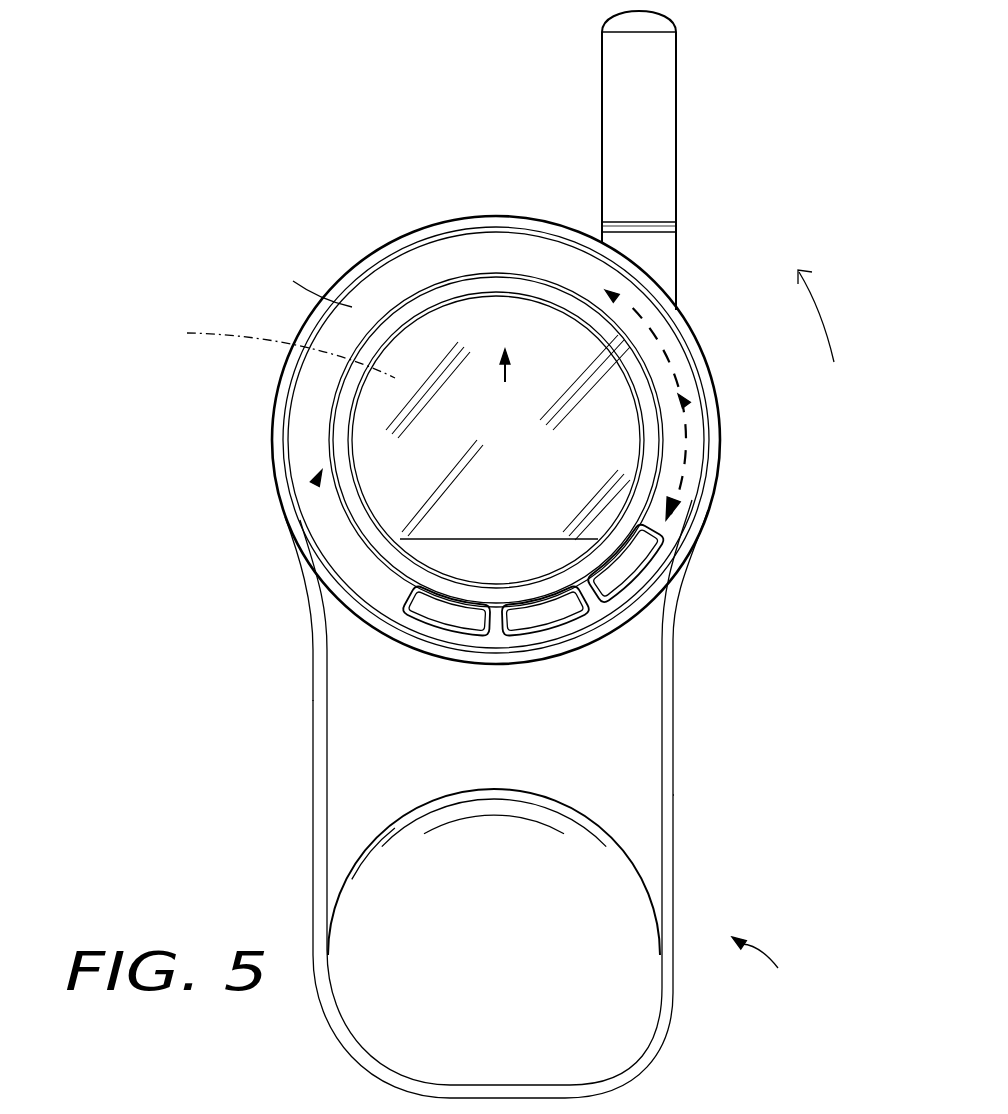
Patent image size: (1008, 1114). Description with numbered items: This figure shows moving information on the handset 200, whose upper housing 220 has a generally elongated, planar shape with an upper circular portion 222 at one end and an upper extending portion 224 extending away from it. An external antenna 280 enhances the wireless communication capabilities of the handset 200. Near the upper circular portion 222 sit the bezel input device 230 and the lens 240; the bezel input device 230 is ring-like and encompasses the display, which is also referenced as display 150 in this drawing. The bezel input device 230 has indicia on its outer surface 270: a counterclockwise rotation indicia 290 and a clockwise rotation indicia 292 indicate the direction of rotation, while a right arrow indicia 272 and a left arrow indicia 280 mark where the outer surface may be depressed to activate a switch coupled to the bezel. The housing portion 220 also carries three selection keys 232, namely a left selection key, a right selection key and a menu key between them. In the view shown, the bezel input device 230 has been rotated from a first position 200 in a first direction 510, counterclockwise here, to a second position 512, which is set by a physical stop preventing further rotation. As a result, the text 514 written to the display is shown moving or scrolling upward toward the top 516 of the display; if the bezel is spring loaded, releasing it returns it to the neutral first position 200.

The handset 200 is at (313, 157).
The upper housing 220 is at (675, 700).
The upper extending portion 224 is at (675, 795).
The right arrow indicia 272 is at (722, 432).
The upper circular portion 222 is at (697, 409).
The outer surface 270 is at (301, 277).
The bezel input device 230 is at (686, 394).
The counterclockwise rotation indicia 290 is at (628, 307).
The clockwise rotation indicia 292 is at (683, 452).
The lens 240 is at (493, 300).
The display 150 is at (362, 418).
The top of the display 516 is at (513, 366).
The text 514 is at (265, 348).
The housing portion selection buttons 232 is at (450, 625).
The external antenna 280 is at (663, 142).
The first direction 510 is at (822, 307).
The second position 512 is at (786, 952).